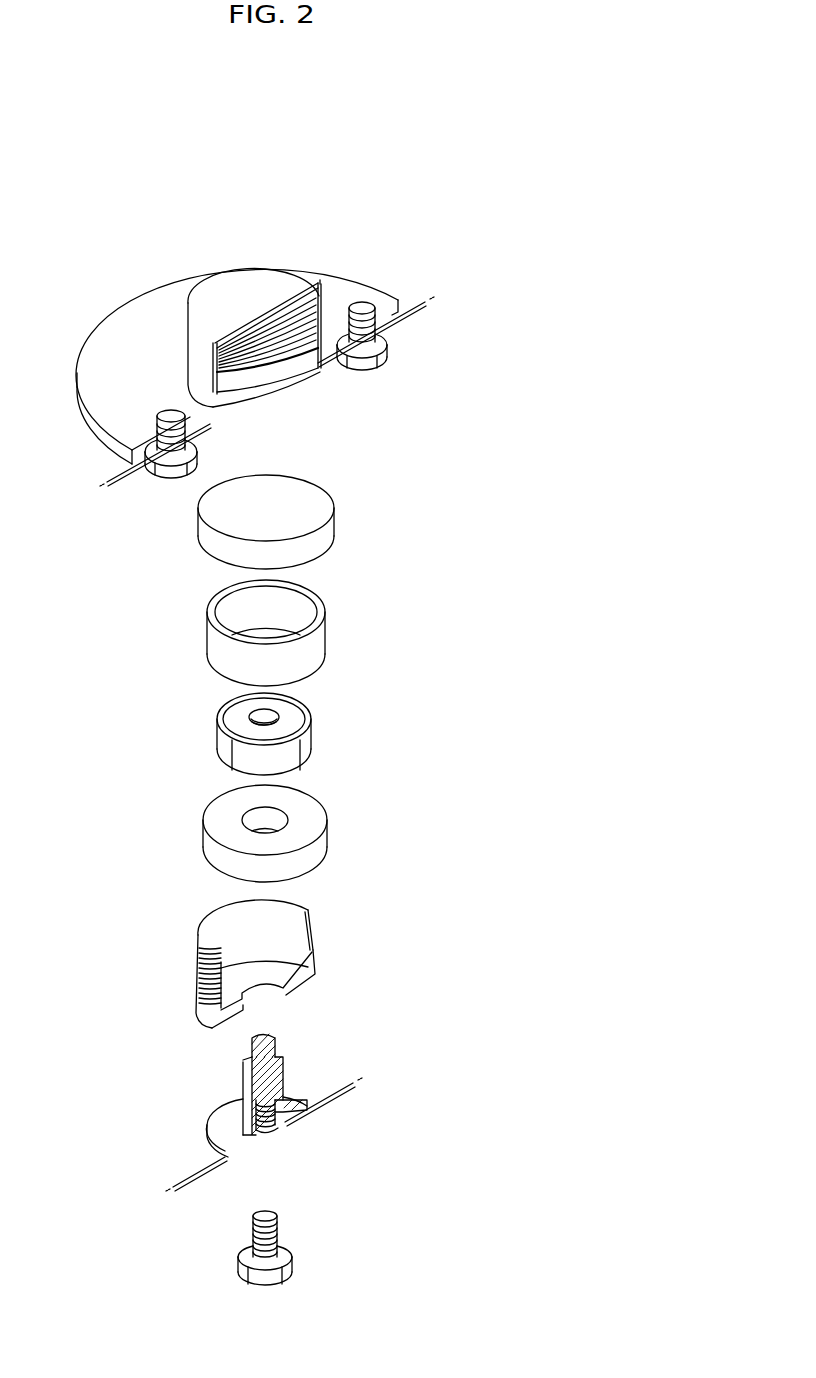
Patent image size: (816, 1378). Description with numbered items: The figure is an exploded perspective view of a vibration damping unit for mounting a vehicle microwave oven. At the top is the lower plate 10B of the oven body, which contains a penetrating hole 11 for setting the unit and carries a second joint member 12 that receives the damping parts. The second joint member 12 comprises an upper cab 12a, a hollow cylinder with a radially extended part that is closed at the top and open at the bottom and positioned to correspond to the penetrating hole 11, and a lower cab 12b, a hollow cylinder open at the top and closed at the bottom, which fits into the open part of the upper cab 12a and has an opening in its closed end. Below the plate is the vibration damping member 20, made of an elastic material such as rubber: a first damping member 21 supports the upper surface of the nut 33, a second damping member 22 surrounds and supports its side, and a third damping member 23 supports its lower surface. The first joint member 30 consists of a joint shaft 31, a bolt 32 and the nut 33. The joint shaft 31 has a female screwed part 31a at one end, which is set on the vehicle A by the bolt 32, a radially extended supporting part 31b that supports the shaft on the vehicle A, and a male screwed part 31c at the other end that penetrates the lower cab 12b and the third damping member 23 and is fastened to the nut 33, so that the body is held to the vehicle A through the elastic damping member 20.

The second joint member 12 is at (322, 309).
The upper cab 12a is at (262, 281).
The lower cab 12b is at (200, 978).
The penetrating hole 11 is at (297, 367).
The lower plate 10B is at (415, 315).
The vibration damping member 20 is at (110, 538).
The first damping member 21 is at (208, 538).
The second damping member 22 is at (220, 640).
The third damping member 23 is at (205, 845).
The first joint member 30 is at (417, 742).
The joint shaft 31 is at (251, 1092).
The female screwed part 31a is at (280, 1130).
The supporting part 31b is at (218, 1130).
The male screwed part 31c is at (251, 1057).
The bolt 32 is at (284, 1246).
The nut 33 is at (310, 742).
The vehicle A is at (196, 1185).